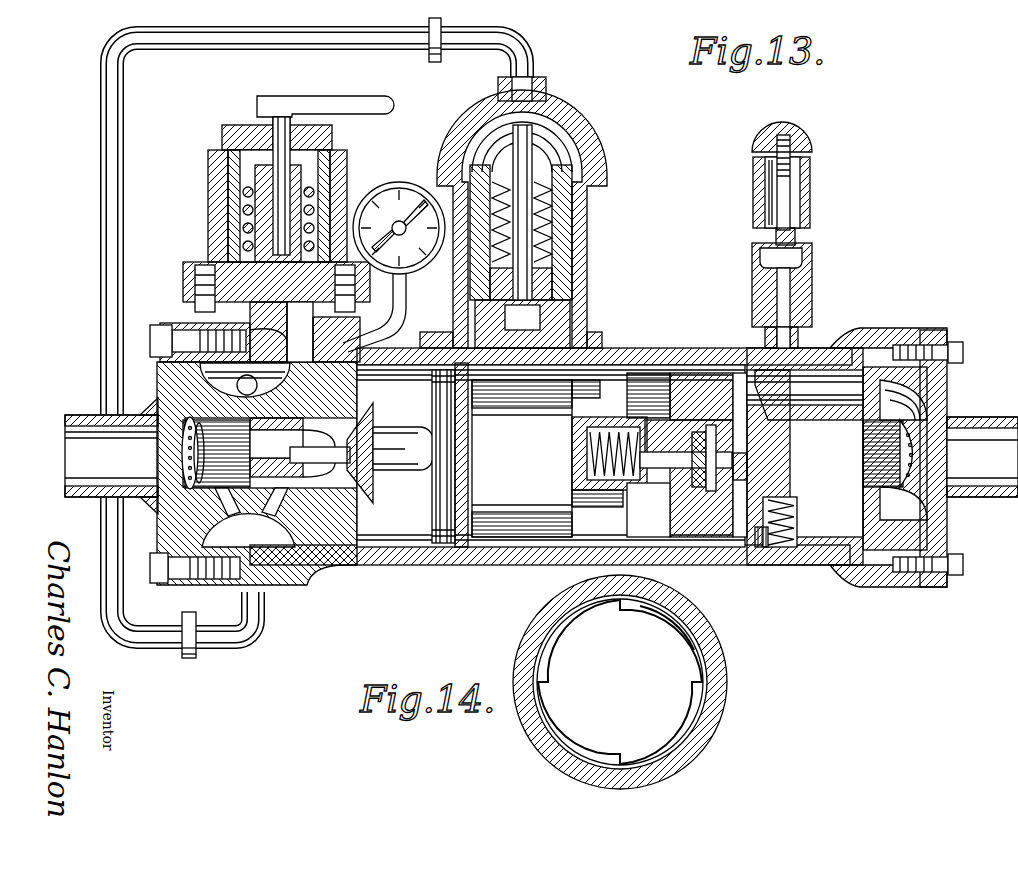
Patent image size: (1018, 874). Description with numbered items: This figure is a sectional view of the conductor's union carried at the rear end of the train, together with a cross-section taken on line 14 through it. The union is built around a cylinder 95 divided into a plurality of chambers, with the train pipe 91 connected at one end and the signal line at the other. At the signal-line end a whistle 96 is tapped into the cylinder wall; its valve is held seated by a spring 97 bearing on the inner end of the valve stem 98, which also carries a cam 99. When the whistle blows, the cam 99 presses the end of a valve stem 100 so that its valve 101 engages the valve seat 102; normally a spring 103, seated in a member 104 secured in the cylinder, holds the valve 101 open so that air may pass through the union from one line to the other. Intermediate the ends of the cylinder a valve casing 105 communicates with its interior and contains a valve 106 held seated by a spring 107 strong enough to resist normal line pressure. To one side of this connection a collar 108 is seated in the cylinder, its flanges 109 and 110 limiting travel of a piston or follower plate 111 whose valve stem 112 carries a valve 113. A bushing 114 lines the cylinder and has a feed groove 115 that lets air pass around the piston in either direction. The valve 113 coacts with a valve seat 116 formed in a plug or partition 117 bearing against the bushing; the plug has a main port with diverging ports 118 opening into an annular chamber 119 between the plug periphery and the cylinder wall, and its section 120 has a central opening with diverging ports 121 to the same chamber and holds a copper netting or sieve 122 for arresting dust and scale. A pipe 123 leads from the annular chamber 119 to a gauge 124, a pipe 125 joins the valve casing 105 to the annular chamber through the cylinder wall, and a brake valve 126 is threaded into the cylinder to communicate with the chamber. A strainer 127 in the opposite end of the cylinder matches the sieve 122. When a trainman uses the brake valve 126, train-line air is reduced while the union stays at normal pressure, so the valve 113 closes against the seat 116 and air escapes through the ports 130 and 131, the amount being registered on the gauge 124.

In FIG. 13, the train pipe 91 is at (78, 412).
In FIG. 13, the section line 14— 14 is at (453, 550).
In FIG. 13, the cylinder 95 is at (300, 333).
In FIG. 13, the whistle 96 is at (812, 270).
In FIG. 13, the spring 97 is at (787, 548).
In FIG. 13, the valve stem 98 is at (790, 456).
In FIG. 13, the cam 99 is at (760, 440).
In FIG. 13, the valve stem 100 is at (738, 463).
In FIG. 13, the valve 101 is at (690, 470).
In FIG. 13, the valve seat 102 is at (668, 486).
In FIG. 13, the spring 103 is at (586, 458).
In FIG. 13, the member 104 is at (575, 432).
In FIG. 13, the valve casing 105 is at (588, 252).
In FIG. 13, the valve 106 is at (572, 282).
In FIG. 13, the spring 107 is at (540, 180).
In FIG. 13, the collar 108 is at (468, 532).
In FIG. 14, the flange 109 is at (552, 708).
In FIG. 14, the flange 110 is at (664, 620).
In FIG. 13, the piston or follower plate 111 is at (433, 495).
In FIG. 13, the valve stem 112 is at (402, 470).
In FIG. 13, the valve 113 is at (361, 453).
In FIG. 13, the bushing 114 is at (248, 434).
In FIG. 13, the feed groove 115 is at (373, 560).
In FIG. 13, the valve seat 116 is at (360, 490).
In FIG. 13, the plug or partition 117 is at (313, 582).
In FIG. 13, the ports 118 is at (263, 512).
In FIG. 13, the annular chamber 119 is at (240, 580).
In FIG. 13, the plug section 120 is at (240, 447).
In FIG. 13, the diverging ports 121 is at (240, 512).
In FIG. 13, the copper netting or sieve 122 is at (186, 452).
In FIG. 13, the pipe 123 is at (406, 305).
In FIG. 13, the gauge 124 is at (393, 181).
In FIG. 13, the pipe 125 is at (305, 40).
In FIG. 13, the brake valve 126 is at (212, 201).
In FIG. 13, the netting or strainer 127 is at (922, 466).
In FIG. 13, the port 130 is at (235, 321).
In FIG. 13, the port 131 is at (190, 300).